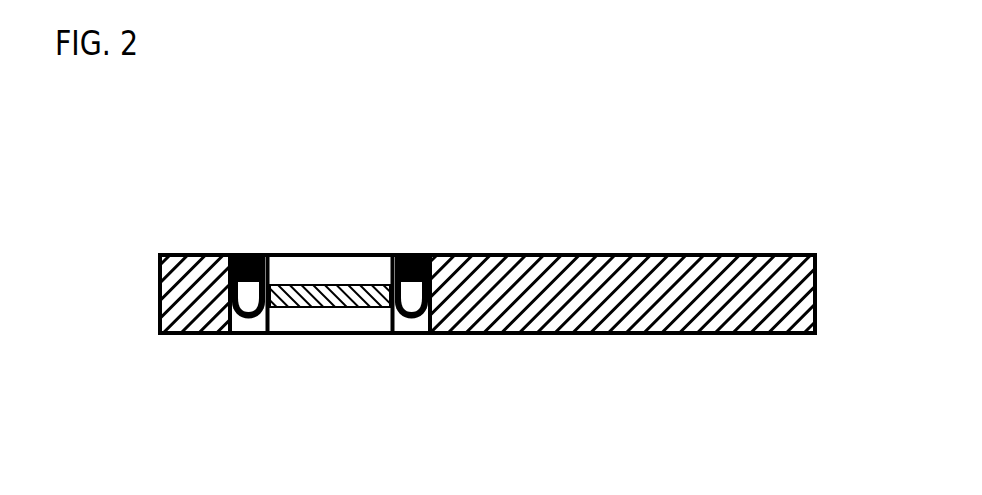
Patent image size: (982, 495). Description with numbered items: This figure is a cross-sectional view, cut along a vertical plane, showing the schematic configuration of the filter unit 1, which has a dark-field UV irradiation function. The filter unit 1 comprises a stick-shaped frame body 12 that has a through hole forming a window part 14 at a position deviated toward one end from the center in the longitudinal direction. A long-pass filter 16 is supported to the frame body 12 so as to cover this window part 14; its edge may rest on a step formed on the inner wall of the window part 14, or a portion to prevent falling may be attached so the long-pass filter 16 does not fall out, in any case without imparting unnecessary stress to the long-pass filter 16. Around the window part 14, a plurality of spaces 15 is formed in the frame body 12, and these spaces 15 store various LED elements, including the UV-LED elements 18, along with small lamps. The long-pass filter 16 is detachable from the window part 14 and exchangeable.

The filter unit 1 is at (700, 157).
The frame body 12 is at (600, 335).
The window part 14 is at (272, 312).
The spaces 15 is at (247, 316).
The long-pass filter 16 is at (343, 285).
The UV-LED element 18 is at (250, 254).